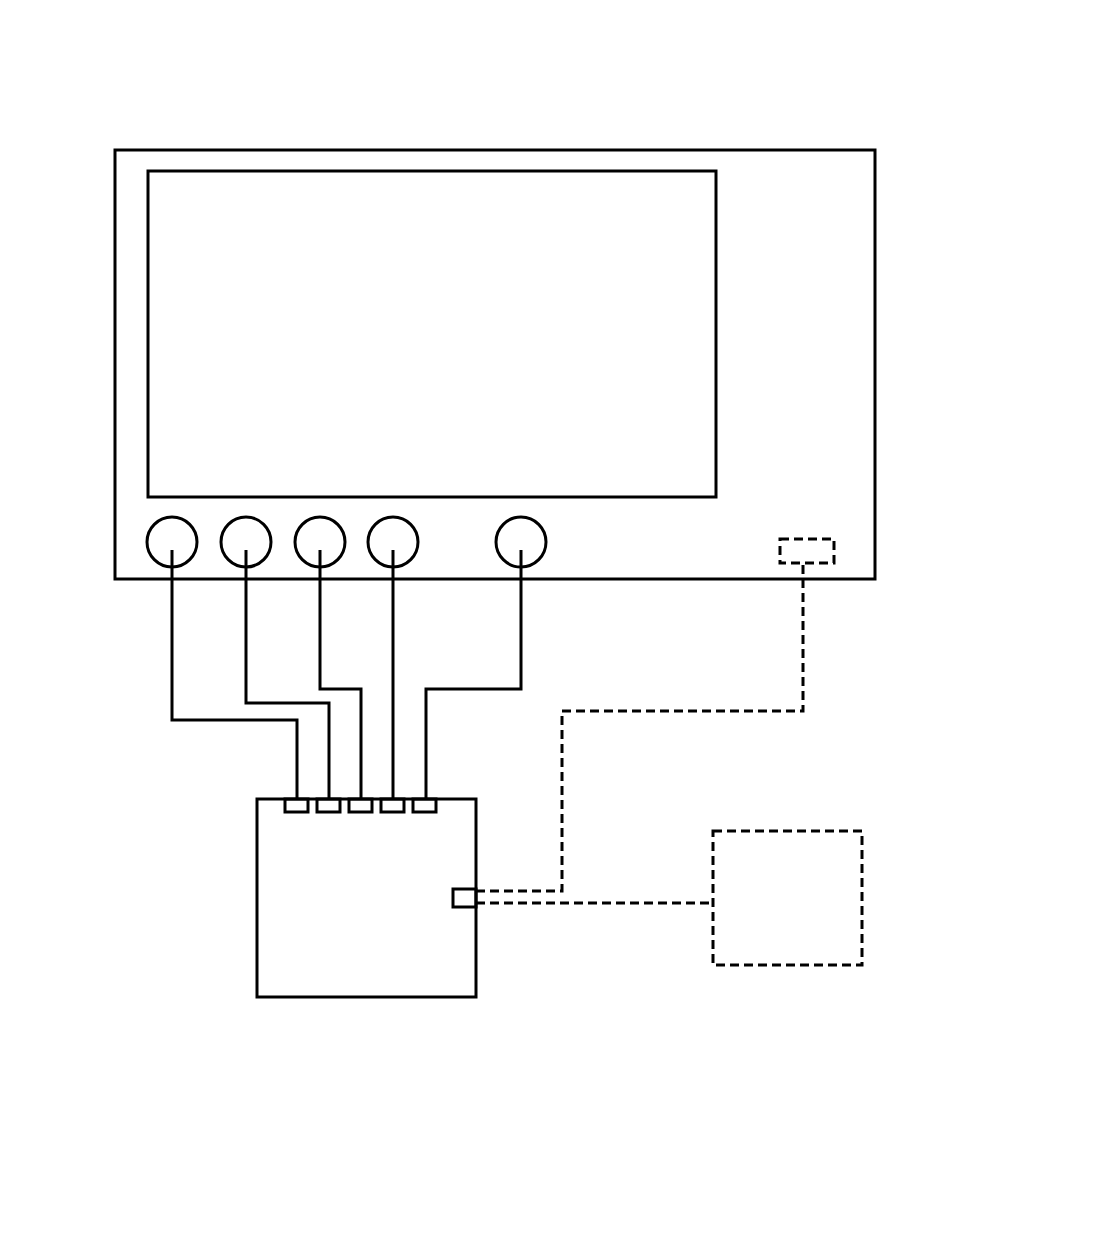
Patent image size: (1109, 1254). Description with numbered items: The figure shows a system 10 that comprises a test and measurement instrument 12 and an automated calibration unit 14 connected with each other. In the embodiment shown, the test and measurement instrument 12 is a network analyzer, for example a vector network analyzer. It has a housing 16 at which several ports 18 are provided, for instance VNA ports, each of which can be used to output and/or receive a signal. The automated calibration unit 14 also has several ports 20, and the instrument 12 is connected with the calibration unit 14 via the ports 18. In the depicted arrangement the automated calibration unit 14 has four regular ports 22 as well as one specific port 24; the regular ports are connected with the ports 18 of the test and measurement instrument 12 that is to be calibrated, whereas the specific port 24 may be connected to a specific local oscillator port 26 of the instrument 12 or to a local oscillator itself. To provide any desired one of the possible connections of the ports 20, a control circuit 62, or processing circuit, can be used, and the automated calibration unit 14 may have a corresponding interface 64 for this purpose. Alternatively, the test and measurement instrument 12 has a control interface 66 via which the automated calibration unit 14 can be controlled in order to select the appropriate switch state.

The system 10 is at (812, 118).
The test and measurement instrument 12 is at (133, 168).
The automated calibration unit 14 is at (257, 962).
The housing 16 is at (745, 168).
The ports 18 is at (148, 548).
The ports 20 is at (371, 804).
The regular ports 22 is at (283, 808).
The specific port 24 is at (437, 808).
The local oscillator port 26 is at (536, 556).
The control circuit 62 is at (790, 967).
The interface 64 is at (462, 908).
The control interface 66 is at (834, 548).